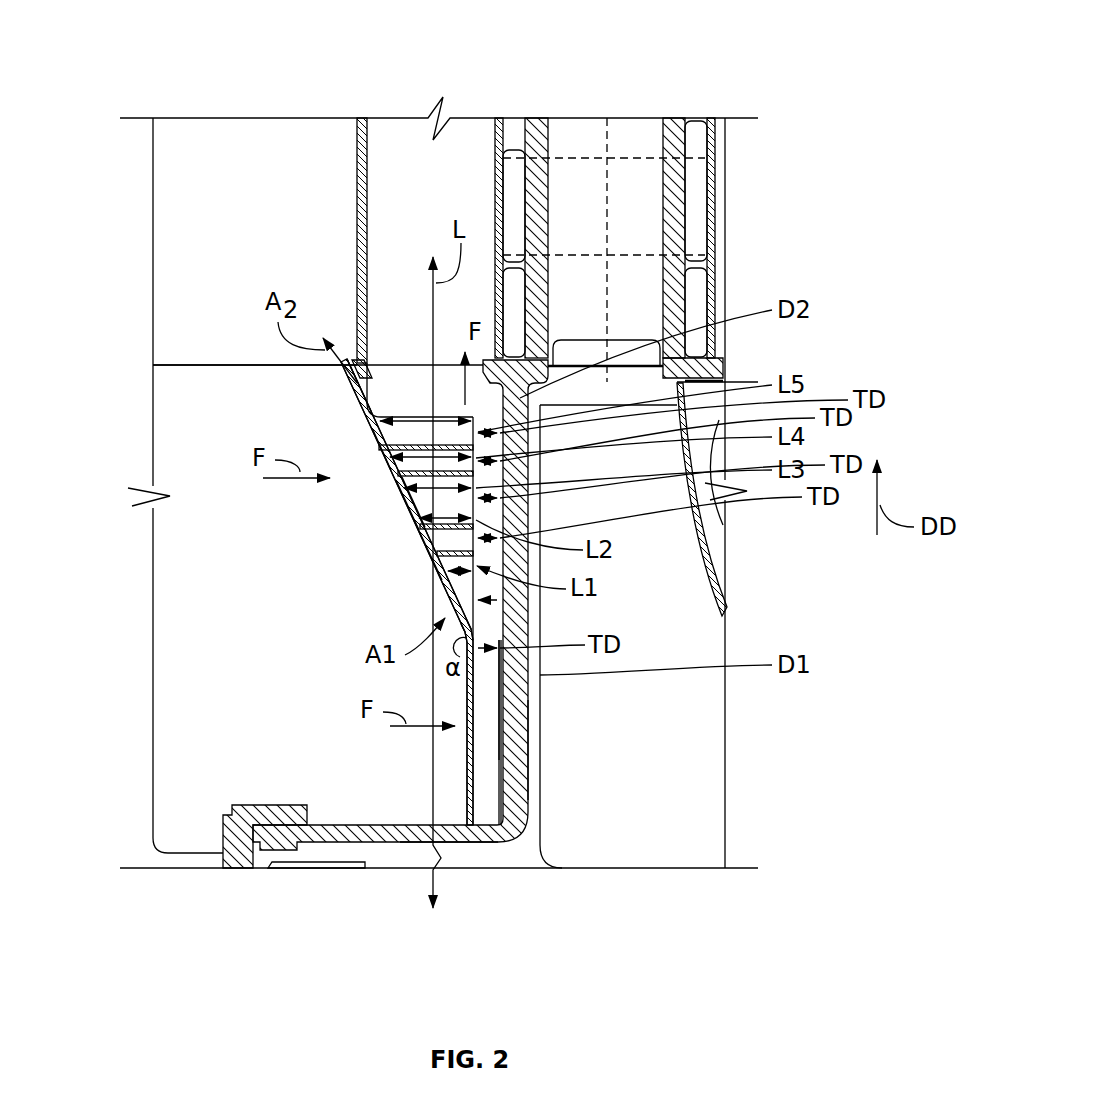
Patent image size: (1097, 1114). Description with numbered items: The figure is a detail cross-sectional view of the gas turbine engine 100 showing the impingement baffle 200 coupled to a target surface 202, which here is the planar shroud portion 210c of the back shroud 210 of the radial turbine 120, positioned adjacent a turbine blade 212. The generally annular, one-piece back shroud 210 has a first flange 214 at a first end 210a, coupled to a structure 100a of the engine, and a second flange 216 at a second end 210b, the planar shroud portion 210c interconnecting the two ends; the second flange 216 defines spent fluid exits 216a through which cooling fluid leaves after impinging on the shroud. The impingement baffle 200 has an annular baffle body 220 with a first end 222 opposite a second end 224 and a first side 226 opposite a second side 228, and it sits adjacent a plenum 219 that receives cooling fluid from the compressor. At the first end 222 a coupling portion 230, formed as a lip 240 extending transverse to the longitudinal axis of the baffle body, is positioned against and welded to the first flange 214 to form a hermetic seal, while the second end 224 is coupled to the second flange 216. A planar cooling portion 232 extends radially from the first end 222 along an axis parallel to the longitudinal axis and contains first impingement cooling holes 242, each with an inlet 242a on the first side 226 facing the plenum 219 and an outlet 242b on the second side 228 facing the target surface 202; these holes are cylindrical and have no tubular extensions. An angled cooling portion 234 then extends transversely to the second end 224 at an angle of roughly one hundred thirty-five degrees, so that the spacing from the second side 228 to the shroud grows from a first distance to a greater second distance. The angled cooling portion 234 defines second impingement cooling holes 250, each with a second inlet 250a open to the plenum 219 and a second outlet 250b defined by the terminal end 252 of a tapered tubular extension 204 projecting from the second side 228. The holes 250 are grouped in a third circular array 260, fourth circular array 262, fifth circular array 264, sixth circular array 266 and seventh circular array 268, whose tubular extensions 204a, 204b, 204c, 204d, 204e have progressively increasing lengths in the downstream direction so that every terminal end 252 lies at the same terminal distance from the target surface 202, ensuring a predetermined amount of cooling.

The gas turbine engine 100 is at (735, 57).
The structure 100a is at (250, 815).
The radial turbine 120 is at (724, 568).
The impingement baffle 200 is at (426, 592).
The target surface 202 is at (476, 527).
The tubular extensions 204 is at (367, 469).
The tubular extension 204a is at (498, 607).
The tubular extension 204b is at (403, 533).
The tubular extension 204c is at (383, 497).
The tubular extension 204d is at (343, 422).
The tubular extension 204e is at (495, 420).
The back shroud 210 is at (540, 660).
The first end 210a is at (525, 845).
The second end 210b is at (507, 380).
The planar shroud portion 210c is at (515, 772).
The turbine blade 212 is at (722, 520).
The first flange 214 is at (332, 813).
The second flange 216 is at (372, 352).
The spent fluid exits 216a is at (381, 357).
The plenum 219 is at (221, 485).
The baffle body 220 is at (412, 402).
The first end 222 is at (403, 843).
The second end 224 is at (347, 368).
The first side 226 is at (400, 682).
The second side 228 is at (503, 731).
The coupling portion 230 is at (456, 812).
The planar cooling portion 232 is at (540, 720).
The angled cooling portion 234 is at (545, 540).
The lip 240 is at (443, 850).
The first impingement cooling holes 242 is at (503, 790).
The inlet 242a is at (453, 800).
The outlet 242b is at (503, 742).
The second impingement cooling holes 250 is at (421, 562).
The second inlet 250a is at (417, 563).
The second outlet 250b is at (476, 530).
The terminal end 252 is at (445, 612).
The third circular array 260 is at (444, 614).
The fourth circular array 262 is at (388, 550).
The fifth circular array 264 is at (393, 507).
The sixth circular array 266 is at (367, 453).
The seventh circular array 268 is at (352, 385).